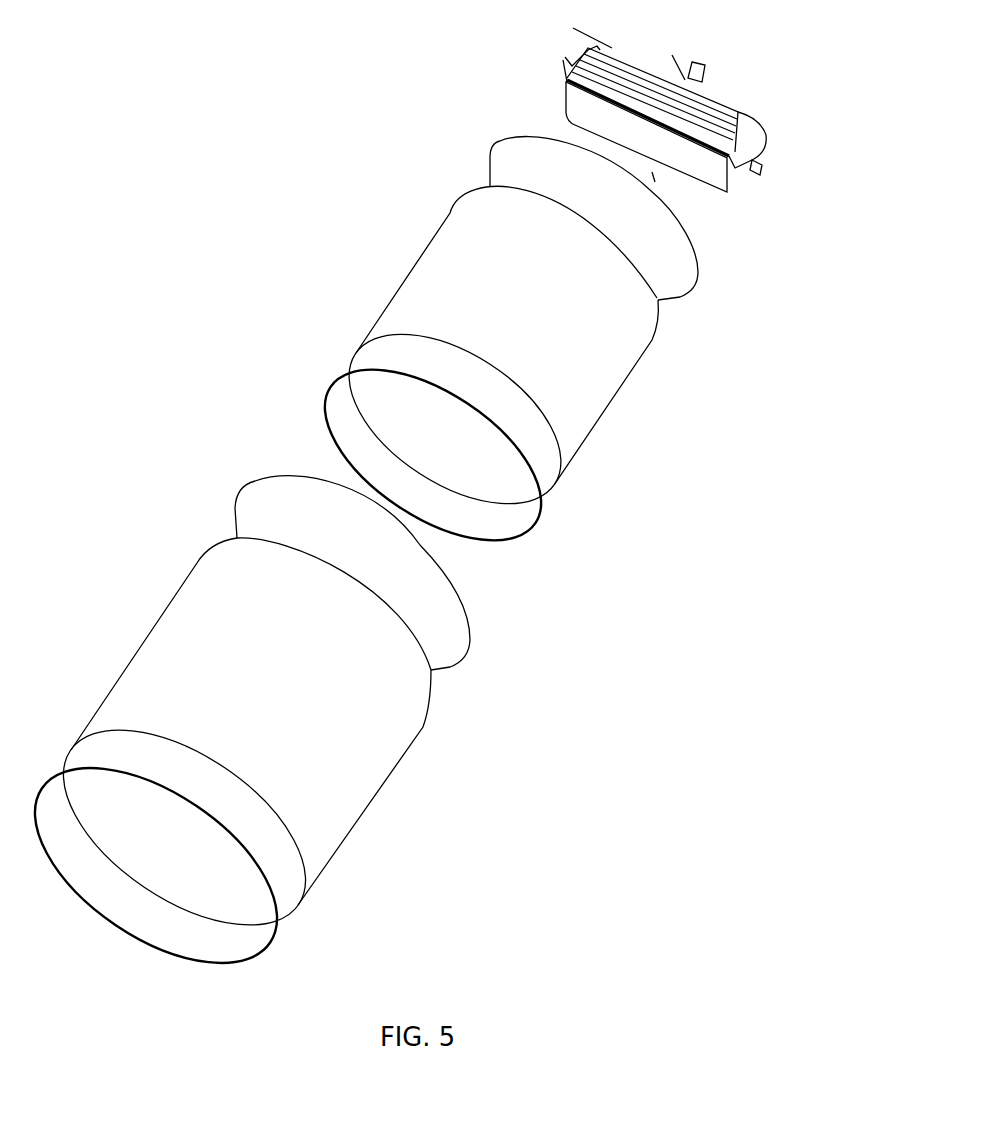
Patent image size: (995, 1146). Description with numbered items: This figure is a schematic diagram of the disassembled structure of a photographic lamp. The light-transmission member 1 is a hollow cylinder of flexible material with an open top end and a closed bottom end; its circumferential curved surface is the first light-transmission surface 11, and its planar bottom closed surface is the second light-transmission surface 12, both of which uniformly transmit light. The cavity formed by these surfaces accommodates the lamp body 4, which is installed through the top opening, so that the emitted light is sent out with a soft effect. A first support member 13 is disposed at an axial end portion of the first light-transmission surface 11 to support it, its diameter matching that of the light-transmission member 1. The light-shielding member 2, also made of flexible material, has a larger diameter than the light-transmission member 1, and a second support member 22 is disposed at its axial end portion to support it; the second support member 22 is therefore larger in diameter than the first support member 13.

The light-transmission member 1 is at (567, 356).
The first light-transmission surface 11 is at (492, 307).
The second light-transmission surface 12 is at (453, 383).
The first support member 13 is at (697, 272).
The light-shielding member 2 is at (349, 739).
The second support member 22 is at (470, 625).
The lamp body 4 is at (728, 126).